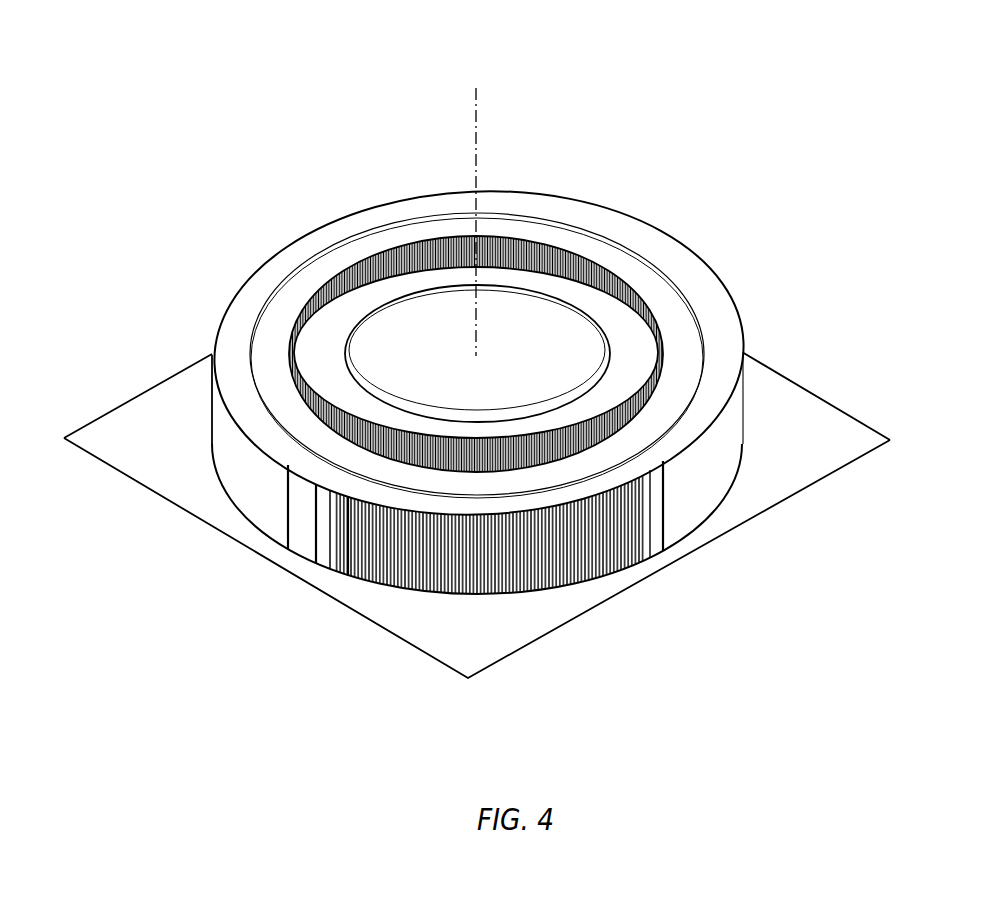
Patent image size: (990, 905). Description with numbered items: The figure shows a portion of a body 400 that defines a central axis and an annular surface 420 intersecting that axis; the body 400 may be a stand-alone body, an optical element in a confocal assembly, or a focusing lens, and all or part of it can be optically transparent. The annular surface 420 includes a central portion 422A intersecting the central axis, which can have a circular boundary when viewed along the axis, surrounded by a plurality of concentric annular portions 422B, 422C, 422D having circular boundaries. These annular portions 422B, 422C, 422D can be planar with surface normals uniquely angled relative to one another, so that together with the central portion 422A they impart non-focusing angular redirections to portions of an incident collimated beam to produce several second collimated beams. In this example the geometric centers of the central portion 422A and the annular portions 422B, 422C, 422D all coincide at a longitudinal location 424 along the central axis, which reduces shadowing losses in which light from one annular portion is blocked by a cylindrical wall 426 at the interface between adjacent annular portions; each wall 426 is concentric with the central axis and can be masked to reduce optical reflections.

The body 400 is at (140, 108).
The annular surface 420 is at (210, 380).
The central portion 422A is at (561, 349).
The annular portion 422B is at (397, 282).
The annular portion 422C is at (637, 277).
The annular portion 422D is at (707, 302).
The longitudinal location 424 is at (464, 352).
The cylindrical wall 426 is at (597, 383).